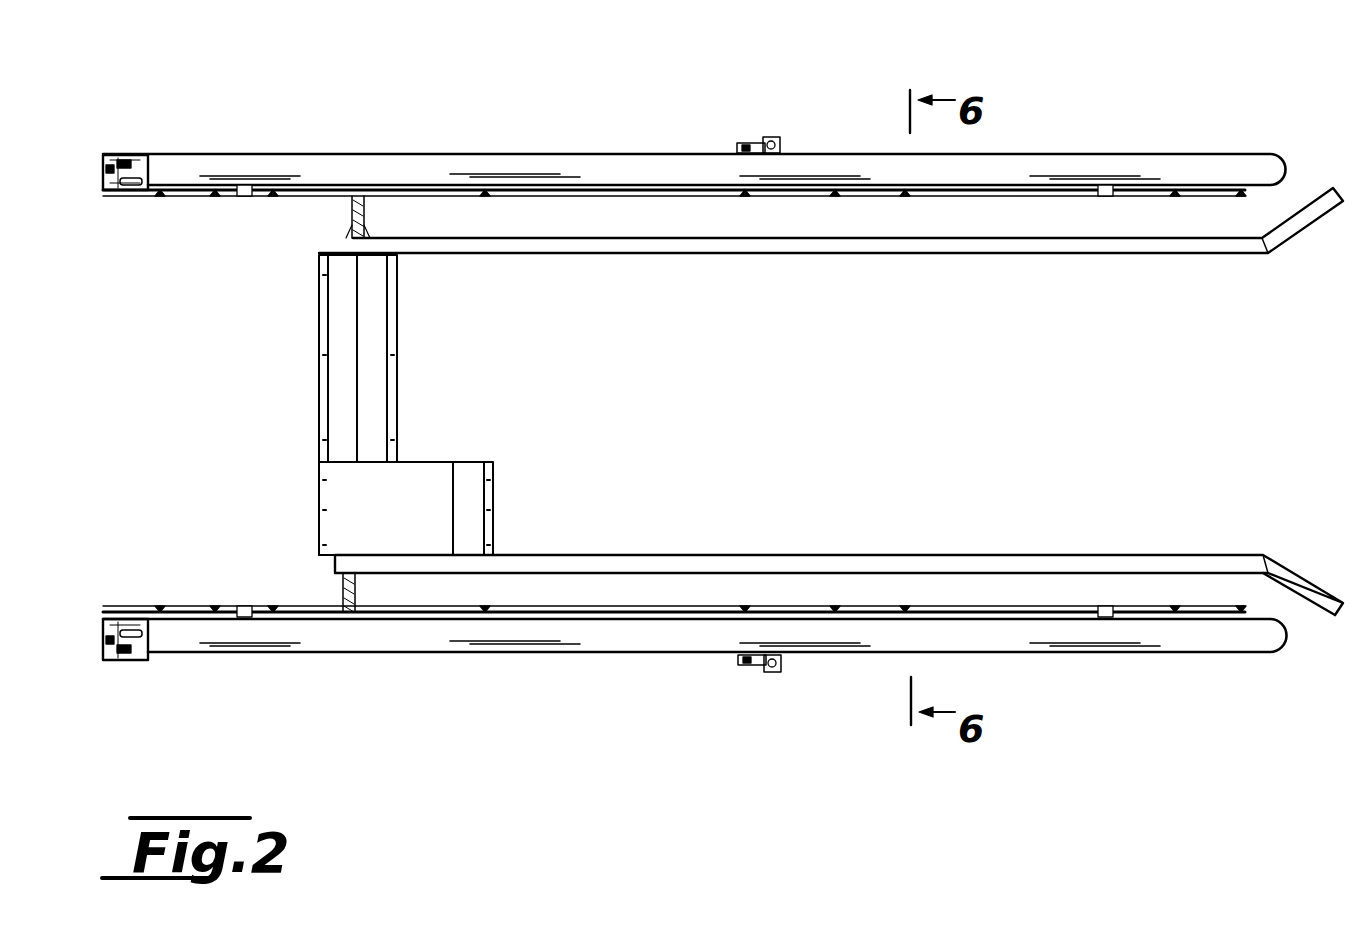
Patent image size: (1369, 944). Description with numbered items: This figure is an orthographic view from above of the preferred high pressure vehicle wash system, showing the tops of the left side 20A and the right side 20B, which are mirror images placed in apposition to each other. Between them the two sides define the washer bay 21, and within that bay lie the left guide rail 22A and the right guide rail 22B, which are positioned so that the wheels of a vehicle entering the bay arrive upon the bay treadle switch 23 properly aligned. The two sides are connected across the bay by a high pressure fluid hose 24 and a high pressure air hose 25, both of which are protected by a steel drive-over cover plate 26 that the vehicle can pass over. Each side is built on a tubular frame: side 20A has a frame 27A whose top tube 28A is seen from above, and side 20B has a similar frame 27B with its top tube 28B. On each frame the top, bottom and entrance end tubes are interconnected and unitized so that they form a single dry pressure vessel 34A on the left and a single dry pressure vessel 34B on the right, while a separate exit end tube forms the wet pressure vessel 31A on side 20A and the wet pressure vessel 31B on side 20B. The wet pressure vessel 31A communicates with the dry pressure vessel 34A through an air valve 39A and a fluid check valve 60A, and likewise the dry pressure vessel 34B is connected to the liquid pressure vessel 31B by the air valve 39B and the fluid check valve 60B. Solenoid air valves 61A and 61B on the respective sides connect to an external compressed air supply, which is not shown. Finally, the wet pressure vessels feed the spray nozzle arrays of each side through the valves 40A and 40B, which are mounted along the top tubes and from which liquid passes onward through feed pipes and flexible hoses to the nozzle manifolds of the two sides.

The left side 20A is at (1030, 670).
The right side 20B is at (1036, 143).
The washer bay 21 is at (628, 391).
The left guide rail 22A is at (750, 560).
The right guide rail 22B is at (785, 250).
The bay treadle switch 23 is at (430, 470).
The high pressure fluid hose 24 is at (365, 245).
The high pressure air hose 25 is at (360, 245).
The steel drive-over cover plate 26 is at (380, 380).
The frame 27A is at (1085, 672).
The frame 27B is at (1132, 155).
The top tube 28A is at (525, 655).
The top tube 28B is at (520, 158).
The wet pressure vessel 31A is at (101, 612).
The wet pressure vessel 31B is at (98, 192).
The dry pressure vessel 34A is at (461, 667).
The dry pressure vessel 34B is at (440, 147).
The air valve 39A is at (120, 660).
The air valve 39B is at (125, 160).
The valve 40A is at (745, 672).
The valve 40B is at (765, 136).
The fluid check valve 60A is at (130, 636).
The fluid check valve 60B is at (130, 185).
The solenoid air valve 61A is at (107, 660).
The solenoid air valve 61B is at (107, 158).